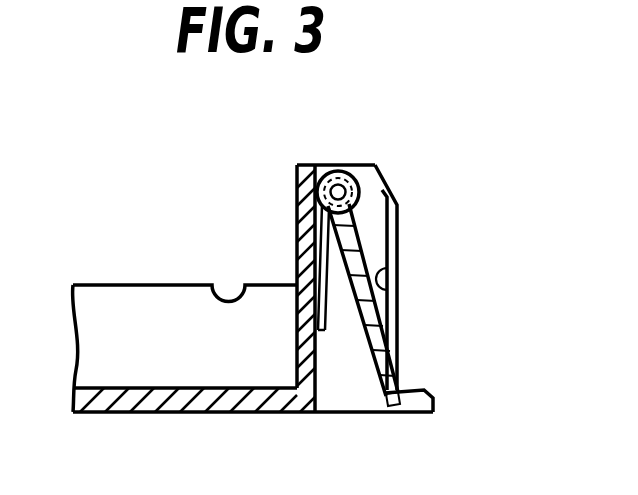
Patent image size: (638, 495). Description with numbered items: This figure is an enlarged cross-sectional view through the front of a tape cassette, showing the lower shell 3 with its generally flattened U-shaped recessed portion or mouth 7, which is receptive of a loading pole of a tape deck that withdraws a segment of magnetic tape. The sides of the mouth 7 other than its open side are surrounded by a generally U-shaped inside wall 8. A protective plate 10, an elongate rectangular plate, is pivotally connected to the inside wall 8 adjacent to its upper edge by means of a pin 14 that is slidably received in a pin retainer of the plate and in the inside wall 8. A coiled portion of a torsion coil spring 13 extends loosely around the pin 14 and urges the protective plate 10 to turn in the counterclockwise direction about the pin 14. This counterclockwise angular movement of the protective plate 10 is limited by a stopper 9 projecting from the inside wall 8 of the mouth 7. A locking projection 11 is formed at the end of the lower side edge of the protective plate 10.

The lower shell 3 is at (192, 413).
The mouth 7 is at (365, 233).
The inside wall 8 is at (378, 168).
The stopper 9 is at (388, 289).
The protective plate 10 is at (363, 355).
The locking projection 11 is at (391, 401).
The torsion coil spring 13 is at (322, 312).
The pin 14 is at (342, 171).